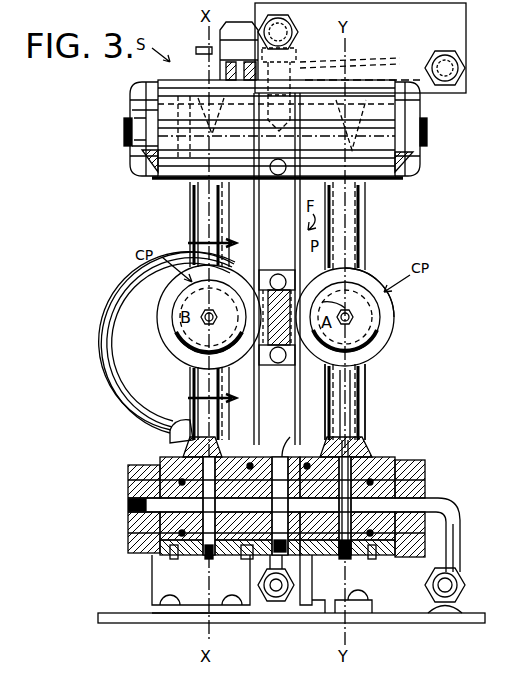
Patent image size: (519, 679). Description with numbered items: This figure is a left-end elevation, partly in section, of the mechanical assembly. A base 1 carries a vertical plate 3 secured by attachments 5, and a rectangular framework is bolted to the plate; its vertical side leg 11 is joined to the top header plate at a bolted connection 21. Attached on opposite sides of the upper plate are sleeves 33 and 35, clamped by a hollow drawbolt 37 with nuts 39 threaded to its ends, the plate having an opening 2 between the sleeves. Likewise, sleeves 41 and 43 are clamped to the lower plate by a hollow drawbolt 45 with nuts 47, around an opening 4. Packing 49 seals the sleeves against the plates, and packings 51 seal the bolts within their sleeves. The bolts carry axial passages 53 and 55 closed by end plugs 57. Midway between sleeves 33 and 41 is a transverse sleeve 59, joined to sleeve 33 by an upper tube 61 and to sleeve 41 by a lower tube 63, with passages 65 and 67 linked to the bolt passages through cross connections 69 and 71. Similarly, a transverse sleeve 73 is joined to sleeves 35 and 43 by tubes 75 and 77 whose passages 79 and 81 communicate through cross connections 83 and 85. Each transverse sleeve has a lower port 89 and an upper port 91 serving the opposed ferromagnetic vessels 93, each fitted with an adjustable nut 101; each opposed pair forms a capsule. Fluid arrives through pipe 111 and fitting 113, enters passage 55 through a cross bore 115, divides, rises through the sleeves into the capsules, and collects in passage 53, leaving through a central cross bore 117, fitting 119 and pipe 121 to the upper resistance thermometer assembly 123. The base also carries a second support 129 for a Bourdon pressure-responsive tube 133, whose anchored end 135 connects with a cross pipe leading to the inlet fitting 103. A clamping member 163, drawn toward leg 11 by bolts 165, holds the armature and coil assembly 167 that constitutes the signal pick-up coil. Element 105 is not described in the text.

The base 1 is at (108, 614).
The opening 2 is at (272, 164).
The vertical plate 3 is at (307, 614).
The opening 4 is at (231, 350).
The attachments 5 is at (360, 614).
The vertical side leg 11 is at (254, 228).
The bolt connection 21 is at (290, 86).
The sleeve 33 is at (385, 172).
The sleeve 35 is at (165, 178).
The hollow drawbolt 37 is at (150, 108).
The nuts 39 is at (135, 90).
The sleeve 41 is at (385, 458).
The sleeve 43 is at (165, 458).
The hollow drawbolt 45 is at (128, 488).
The nuts 47 is at (425, 470).
The packing 49 is at (249, 462).
The packings 51 is at (165, 82).
The axial passage 53 is at (215, 128).
The axial passage 55 is at (172, 508).
The end plugs 57 is at (124, 132).
The transverse sleeve 59 is at (395, 298).
The upper tube 61 is at (365, 229).
The lower tube 63 is at (366, 399).
The passage 65 is at (360, 246).
The passage 67 is at (350, 438).
The cross connection 69 is at (361, 182).
The cross connection 71 is at (352, 458).
The transverse sleeve 73 is at (155, 280).
The tube 75 is at (190, 222).
The tube 77 is at (200, 380).
The passage 79 is at (200, 203).
The passage 81 is at (176, 372).
The cross connection 83 is at (234, 311).
The cross connection 85 is at (200, 458).
The lower transverse port 89 is at (180, 346).
The upper transverse port 91 is at (228, 272).
The vessels 93 is at (170, 333).
The adjustable nut 101 is at (220, 309).
The inlet fitting 103 is at (460, 578).
The foot 105 is at (436, 613).
The pipe 111 is at (278, 600).
The fitting 113 is at (270, 622).
The cross bore 115 is at (246, 560).
The central cross bore 117 is at (300, 112).
The fitting 119 is at (296, 50).
The pipe 121 is at (295, 22).
The resistance thermometer assembly 123 is at (466, 20).
The second support 129 is at (152, 591).
The Bourdon pressure-responsive tube 133 is at (105, 331).
The anchored end 135 is at (167, 432).
The clamping member 163 is at (275, 307).
The bolts 165 is at (286, 325).
The armature and coil assembly 167 is at (331, 302).